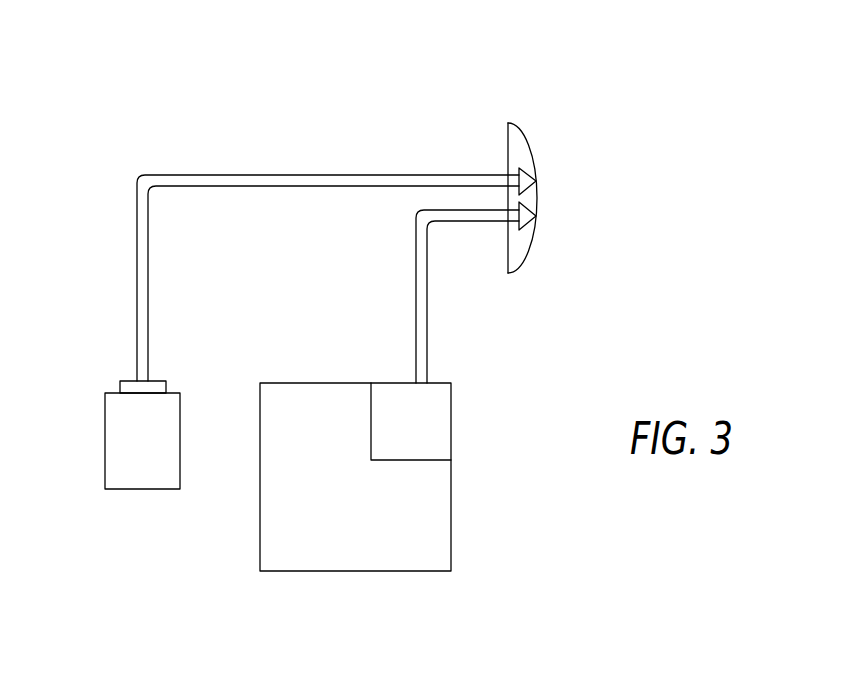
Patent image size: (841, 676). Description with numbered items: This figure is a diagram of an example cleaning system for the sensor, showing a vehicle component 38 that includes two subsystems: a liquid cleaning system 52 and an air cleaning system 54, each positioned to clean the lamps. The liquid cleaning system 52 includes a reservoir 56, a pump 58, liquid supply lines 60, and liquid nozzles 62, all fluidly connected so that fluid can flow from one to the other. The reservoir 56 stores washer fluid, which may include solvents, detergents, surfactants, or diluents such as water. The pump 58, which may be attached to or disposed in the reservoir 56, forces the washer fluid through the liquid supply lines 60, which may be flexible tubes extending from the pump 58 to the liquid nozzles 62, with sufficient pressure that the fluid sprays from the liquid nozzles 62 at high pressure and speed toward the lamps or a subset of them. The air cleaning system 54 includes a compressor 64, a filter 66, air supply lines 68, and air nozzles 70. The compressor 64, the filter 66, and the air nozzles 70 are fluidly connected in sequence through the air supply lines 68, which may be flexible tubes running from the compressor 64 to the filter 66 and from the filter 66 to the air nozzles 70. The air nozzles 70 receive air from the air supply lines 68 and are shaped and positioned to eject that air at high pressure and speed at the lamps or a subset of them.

The vehicle component 38 is at (186, 110).
The liquid cleaning system 52 is at (297, 587).
The air cleaning system 54 is at (128, 522).
The reservoir 56 is at (452, 508).
The pump 58 is at (396, 462).
The liquid supply lines 60 is at (427, 310).
The liquid nozzles 62 is at (522, 230).
The compressor 64 is at (105, 455).
The filter 66 is at (120, 379).
The air supply lines 68 is at (137, 225).
The air nozzles 70 is at (521, 170).